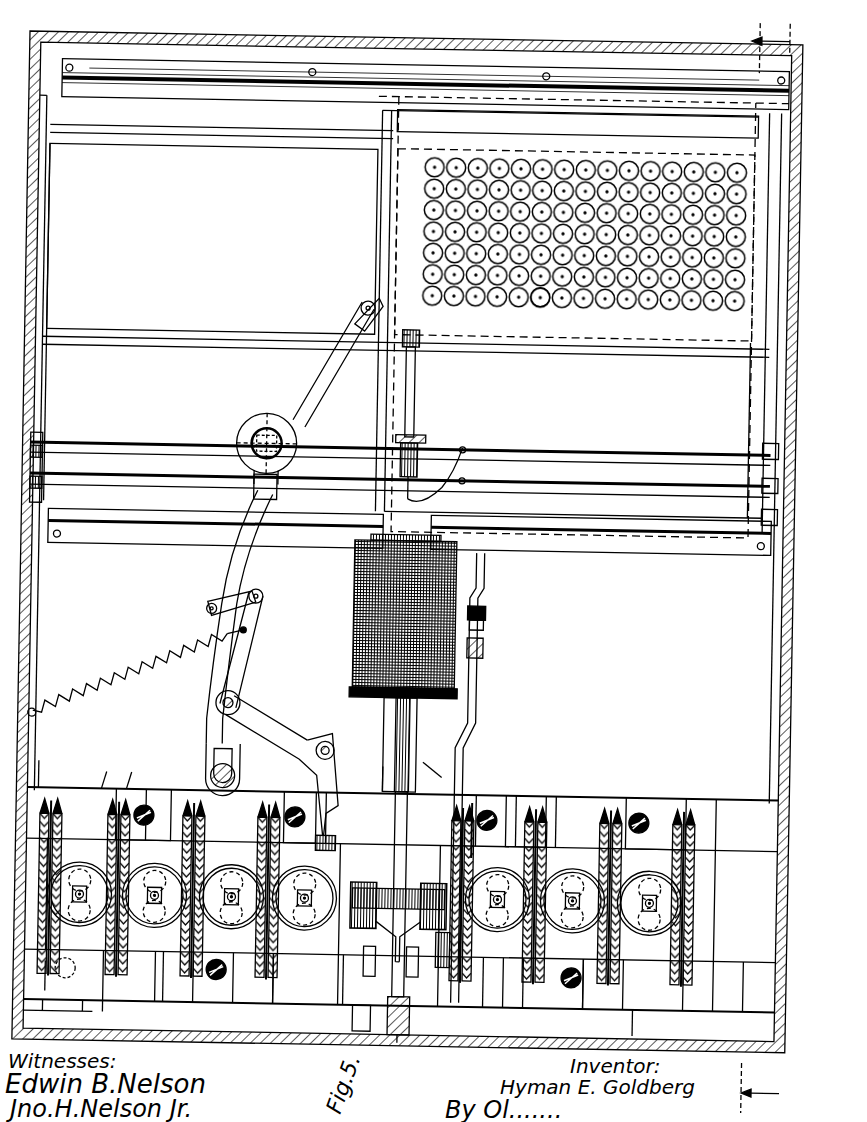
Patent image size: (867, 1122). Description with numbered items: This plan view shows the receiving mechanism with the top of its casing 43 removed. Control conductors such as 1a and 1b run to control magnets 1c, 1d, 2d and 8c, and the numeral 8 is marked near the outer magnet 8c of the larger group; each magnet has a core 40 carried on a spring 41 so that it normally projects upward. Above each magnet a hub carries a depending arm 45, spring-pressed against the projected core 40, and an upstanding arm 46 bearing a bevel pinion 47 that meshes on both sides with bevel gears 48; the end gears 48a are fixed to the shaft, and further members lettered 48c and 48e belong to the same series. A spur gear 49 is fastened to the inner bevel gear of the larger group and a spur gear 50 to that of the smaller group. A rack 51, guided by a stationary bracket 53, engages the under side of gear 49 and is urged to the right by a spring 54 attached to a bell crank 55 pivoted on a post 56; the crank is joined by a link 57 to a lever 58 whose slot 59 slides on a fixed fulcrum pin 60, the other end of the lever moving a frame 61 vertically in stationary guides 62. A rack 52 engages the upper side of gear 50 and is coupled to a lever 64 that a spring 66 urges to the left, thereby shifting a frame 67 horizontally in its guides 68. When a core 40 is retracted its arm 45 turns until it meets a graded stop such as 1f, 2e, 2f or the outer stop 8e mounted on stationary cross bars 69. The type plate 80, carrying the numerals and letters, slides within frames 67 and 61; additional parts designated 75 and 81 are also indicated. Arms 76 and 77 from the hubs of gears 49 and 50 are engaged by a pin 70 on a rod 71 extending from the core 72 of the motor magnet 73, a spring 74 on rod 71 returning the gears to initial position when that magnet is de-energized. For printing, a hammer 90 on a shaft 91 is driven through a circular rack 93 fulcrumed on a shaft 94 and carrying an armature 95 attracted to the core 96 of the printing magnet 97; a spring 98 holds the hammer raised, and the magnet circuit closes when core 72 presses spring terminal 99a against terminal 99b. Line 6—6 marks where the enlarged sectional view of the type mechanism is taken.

The control conductor 1a is at (312, 990).
The control conductor 1b is at (482, 998).
The control magnet 1c is at (290, 740).
The control magnet 1d is at (464, 811).
The stop 1f is at (505, 813).
The control magnet 2d is at (580, 990).
The stop 2e is at (261, 982).
The stop 2f is at (522, 987).
The section line 6 is at (641, 242).
The type wheel 8 is at (100, 930).
The wheel hub 8c is at (22, 981).
The wheel bearing 8e is at (155, 1018).
The core 40 is at (165, 930).
The spring 41 is at (766, 568).
The casing 43 is at (50, 660).
The arm 45 is at (410, 987).
The arm 46 is at (631, 1026).
The bevel pinion 47 is at (95, 880).
The bevel gear 48 is at (560, 790).
The outer bevel gear 48a is at (352, 796).
The gear strip part 48c is at (91, 767).
The gear strip part 48e is at (114, 770).
The spur gear 49 is at (370, 825).
The spur gear 50 is at (470, 838).
The rack 51 is at (342, 735).
The rack 52 is at (423, 765).
The stationary bracket 53 is at (385, 1022).
The spring 54 is at (128, 670).
The bell crank 55 is at (272, 638).
The post 56 is at (262, 690).
The link 57 is at (255, 580).
The lever 58 is at (226, 580).
The slot 59 is at (227, 752).
The fulcrum pin 60 is at (224, 772).
The frame 61 is at (375, 380).
The stationary guide 62 is at (270, 82).
The lever 64 is at (496, 622).
The spring 66 is at (494, 560).
The frame 67 is at (240, 135).
The stationary guide 68 is at (48, 395).
The cross bar 69 is at (545, 810).
The pin 70 is at (430, 940).
The rod 71 is at (396, 770).
The core 72 is at (396, 730).
The motor magnet 73 is at (364, 612).
The spring 74 is at (420, 1010).
The gear 75 is at (500, 930).
The arm 76 is at (380, 955).
The arm 77 is at (430, 965).
The type plate 80 is at (402, 222).
The key 81 is at (585, 297).
The hammer 90 is at (414, 322).
The shaft 91 is at (160, 445).
The circular rack 93 is at (270, 495).
The shaft 94 is at (192, 475).
The armature 95 is at (257, 432).
The core 96 is at (262, 455).
The printing magnet 97 is at (270, 410).
The spring 98 is at (435, 468).
The spring terminal 99a is at (452, 425).
The terminal 99b is at (435, 445).